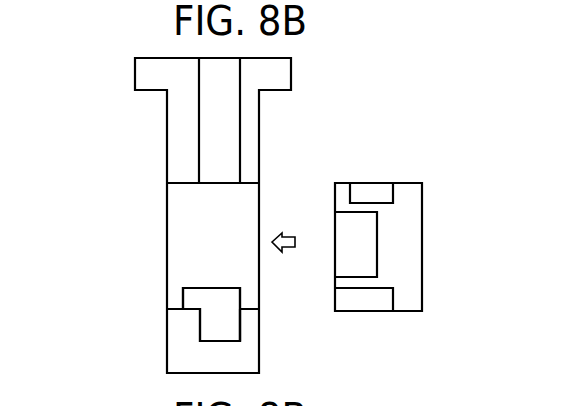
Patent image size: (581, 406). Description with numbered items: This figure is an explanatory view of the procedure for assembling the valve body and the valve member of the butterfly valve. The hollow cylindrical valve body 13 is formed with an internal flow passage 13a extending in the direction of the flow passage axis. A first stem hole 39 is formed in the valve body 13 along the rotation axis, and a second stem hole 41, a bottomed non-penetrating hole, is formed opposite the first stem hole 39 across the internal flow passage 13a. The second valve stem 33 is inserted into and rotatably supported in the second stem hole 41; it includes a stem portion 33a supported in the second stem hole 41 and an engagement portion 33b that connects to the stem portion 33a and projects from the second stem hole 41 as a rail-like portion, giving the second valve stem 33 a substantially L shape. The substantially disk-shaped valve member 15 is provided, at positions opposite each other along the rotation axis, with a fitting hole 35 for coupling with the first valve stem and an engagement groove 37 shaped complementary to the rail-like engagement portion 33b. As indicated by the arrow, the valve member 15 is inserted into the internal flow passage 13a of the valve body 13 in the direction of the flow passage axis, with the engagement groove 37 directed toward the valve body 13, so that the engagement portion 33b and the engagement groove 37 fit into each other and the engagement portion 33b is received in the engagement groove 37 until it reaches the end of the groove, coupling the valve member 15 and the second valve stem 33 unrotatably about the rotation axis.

The valve body 13 is at (292, 73).
The internal flow passage 13a is at (183, 184).
The first stem hole 39 is at (241, 123).
The second valve stem 33 is at (68, 285).
The stem portion 33a is at (210, 323).
The engagement portion 33b is at (184, 292).
The second stem hole 41 is at (240, 318).
The valve member 15 is at (423, 245).
The fitting hole 35 is at (393, 193).
The engagement groove 37 is at (390, 297).